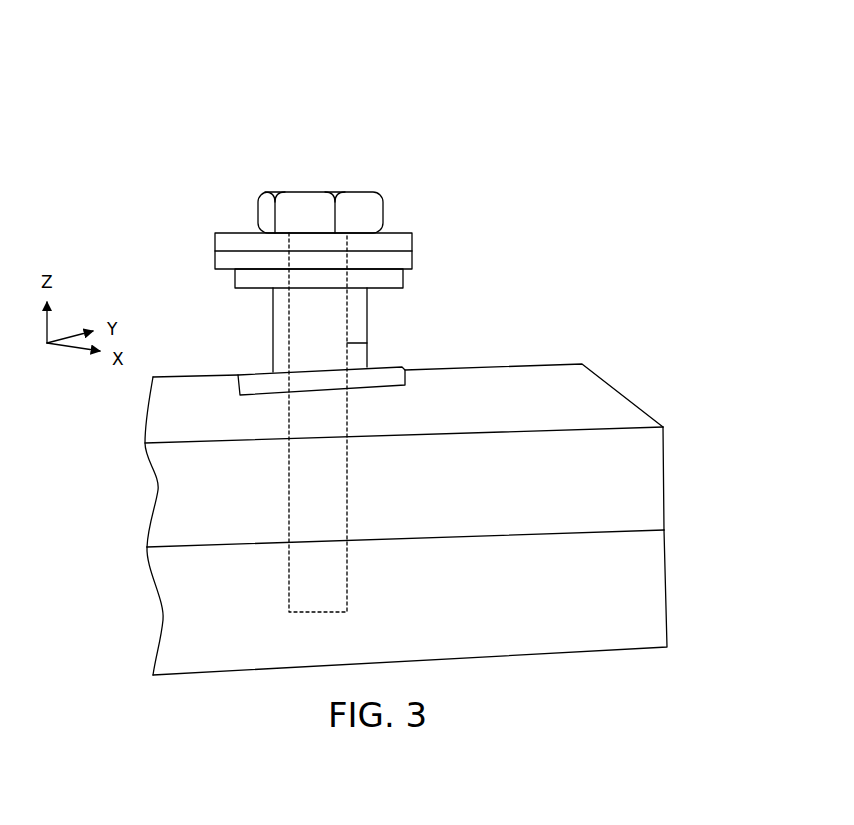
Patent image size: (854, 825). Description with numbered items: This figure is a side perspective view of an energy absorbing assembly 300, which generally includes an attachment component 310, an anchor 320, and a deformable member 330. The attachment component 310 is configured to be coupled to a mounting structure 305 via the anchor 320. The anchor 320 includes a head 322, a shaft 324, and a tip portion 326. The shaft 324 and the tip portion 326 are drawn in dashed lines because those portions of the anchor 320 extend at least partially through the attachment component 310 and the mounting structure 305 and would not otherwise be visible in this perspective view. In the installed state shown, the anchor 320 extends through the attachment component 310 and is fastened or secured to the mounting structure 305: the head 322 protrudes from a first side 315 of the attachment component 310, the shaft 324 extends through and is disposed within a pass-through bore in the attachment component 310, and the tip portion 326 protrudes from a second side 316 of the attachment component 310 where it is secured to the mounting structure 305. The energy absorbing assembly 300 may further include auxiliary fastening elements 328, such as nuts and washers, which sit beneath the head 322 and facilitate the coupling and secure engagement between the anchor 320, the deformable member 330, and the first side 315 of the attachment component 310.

The energy absorbing assembly 300 is at (117, 66).
The mounting structure 305 is at (645, 580).
The attachment component 310 is at (637, 488).
The first side 315 is at (598, 403).
The second side 316 is at (570, 534).
The anchor 320 is at (326, 165).
The head 322 is at (290, 218).
The shaft 324 is at (343, 428).
The tip portion 326 is at (288, 596).
The auxiliary fastening elements 328 is at (405, 374).
The deformable member 330 is at (282, 332).